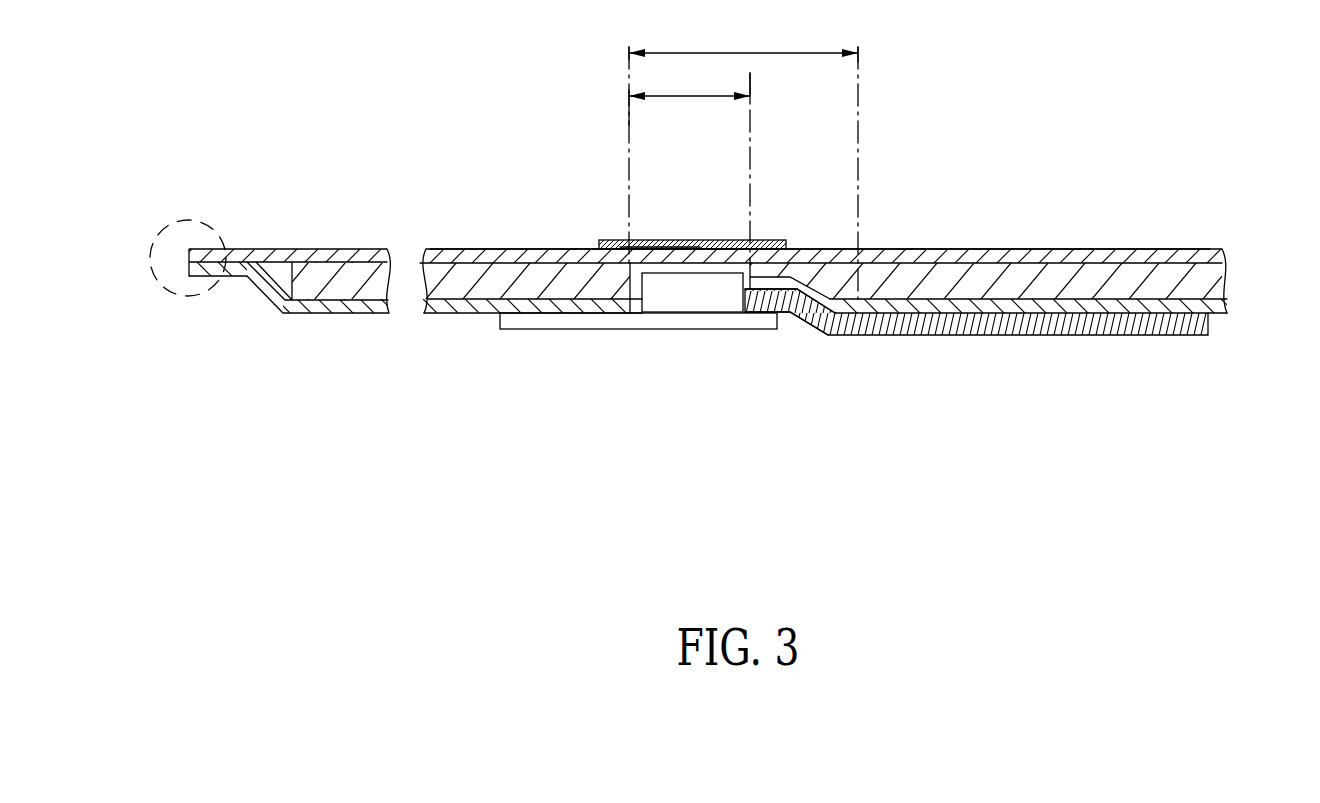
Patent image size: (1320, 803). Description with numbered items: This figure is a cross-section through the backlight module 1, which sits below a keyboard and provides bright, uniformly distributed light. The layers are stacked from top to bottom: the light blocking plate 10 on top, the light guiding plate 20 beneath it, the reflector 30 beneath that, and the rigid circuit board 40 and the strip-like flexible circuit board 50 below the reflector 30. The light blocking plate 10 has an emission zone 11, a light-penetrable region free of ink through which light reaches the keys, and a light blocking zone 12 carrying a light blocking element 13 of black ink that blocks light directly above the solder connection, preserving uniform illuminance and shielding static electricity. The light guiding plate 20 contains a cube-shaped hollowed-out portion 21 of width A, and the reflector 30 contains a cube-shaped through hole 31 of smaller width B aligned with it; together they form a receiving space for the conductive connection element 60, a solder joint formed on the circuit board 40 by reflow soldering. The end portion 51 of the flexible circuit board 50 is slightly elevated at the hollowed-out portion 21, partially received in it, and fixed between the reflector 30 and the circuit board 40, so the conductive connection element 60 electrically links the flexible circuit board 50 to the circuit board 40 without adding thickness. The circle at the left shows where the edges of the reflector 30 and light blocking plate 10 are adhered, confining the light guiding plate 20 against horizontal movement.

The backlight module 1 is at (412, 450).
The light blocking plate 10 is at (1187, 249).
The emission zone 11 is at (508, 249).
The light blocking zone 12 is at (667, 236).
The light blocking element 13 is at (712, 240).
The light guiding plate 20 is at (1105, 270).
The hollowed-out portion 21 is at (805, 255).
The reflector 30 is at (1218, 313).
The through hole 31 is at (635, 326).
The circuit board 40 is at (553, 329).
The flexible circuit board 50 is at (1028, 335).
The end portion 51 is at (760, 327).
The conductive connection element 60 is at (702, 298).